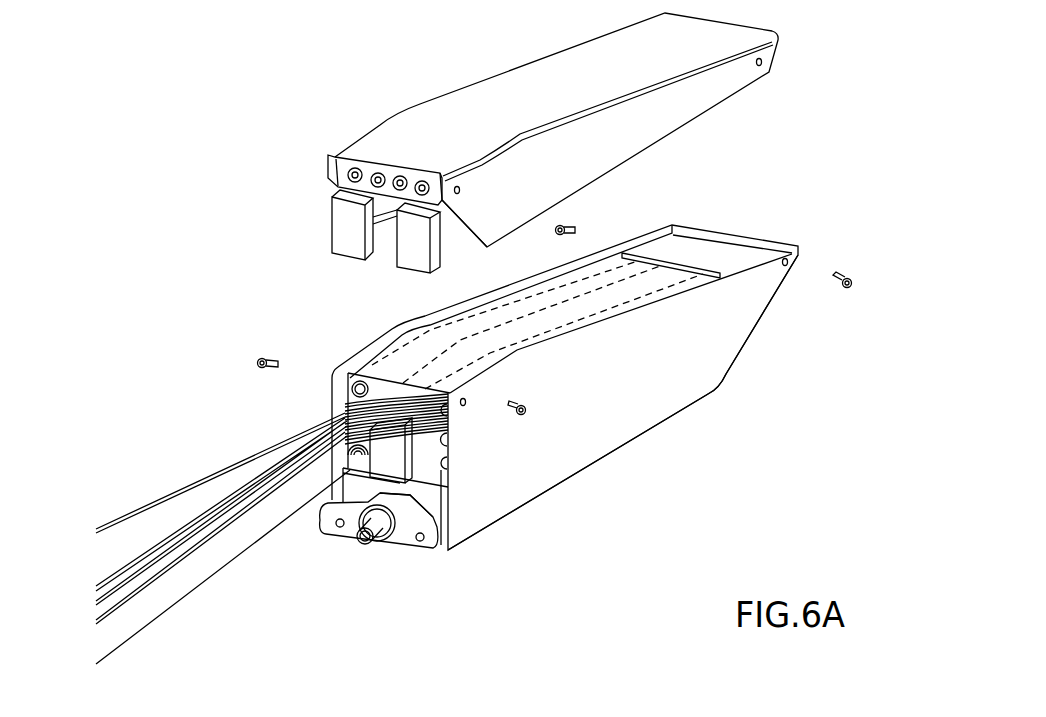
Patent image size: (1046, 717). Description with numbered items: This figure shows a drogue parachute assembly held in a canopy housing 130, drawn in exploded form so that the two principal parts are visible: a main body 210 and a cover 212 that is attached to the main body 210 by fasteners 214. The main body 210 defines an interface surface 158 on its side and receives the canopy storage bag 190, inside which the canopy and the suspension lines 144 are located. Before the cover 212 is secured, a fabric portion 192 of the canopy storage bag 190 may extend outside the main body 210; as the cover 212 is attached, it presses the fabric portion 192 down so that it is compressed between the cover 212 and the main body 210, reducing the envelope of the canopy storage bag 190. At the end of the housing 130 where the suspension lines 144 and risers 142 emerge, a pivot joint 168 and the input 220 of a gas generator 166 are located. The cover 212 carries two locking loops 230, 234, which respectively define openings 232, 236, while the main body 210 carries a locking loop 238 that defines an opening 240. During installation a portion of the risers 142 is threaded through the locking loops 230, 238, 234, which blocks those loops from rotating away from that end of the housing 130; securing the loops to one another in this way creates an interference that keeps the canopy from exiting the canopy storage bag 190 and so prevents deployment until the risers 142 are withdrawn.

The canopy housing 130 is at (206, 143).
The cover 212 is at (553, 62).
The opening 232 is at (372, 206).
The opening 236 is at (437, 229).
The locking loop 230 is at (350, 245).
The locking loop 234 is at (408, 262).
The main body 210 is at (638, 398).
The interface surface 158 is at (753, 327).
The fasteners 214 is at (258, 366).
The canopy storage bag 190 is at (605, 263).
The fabric portion 192 is at (526, 326).
The locking loop 238 is at (399, 458).
The opening 240 is at (416, 462).
The suspension lines 144 is at (367, 380).
The risers 142 is at (131, 620).
The gas generator 166 is at (387, 528).
The pivot joint 168 is at (405, 540).
The input 220 is at (363, 541).